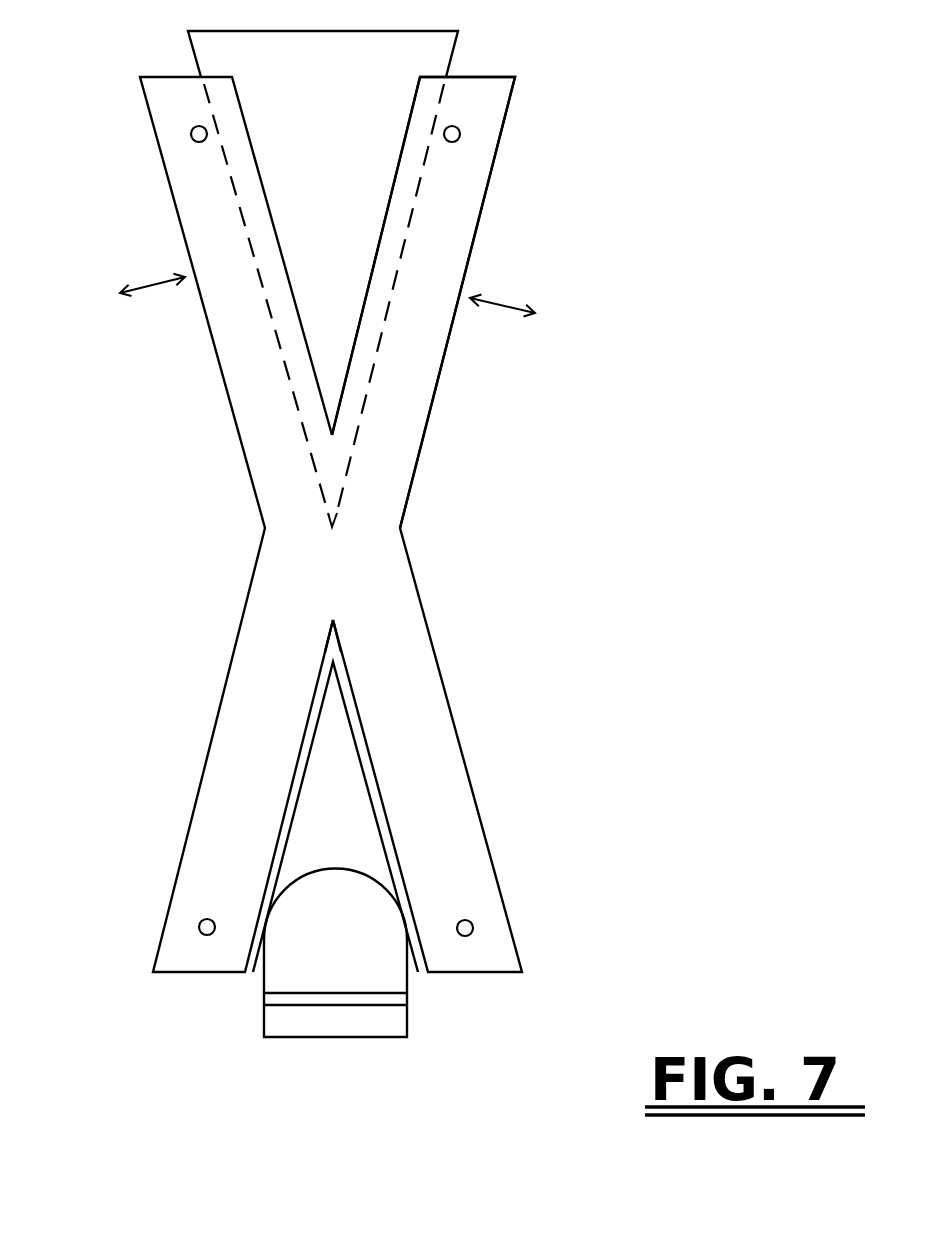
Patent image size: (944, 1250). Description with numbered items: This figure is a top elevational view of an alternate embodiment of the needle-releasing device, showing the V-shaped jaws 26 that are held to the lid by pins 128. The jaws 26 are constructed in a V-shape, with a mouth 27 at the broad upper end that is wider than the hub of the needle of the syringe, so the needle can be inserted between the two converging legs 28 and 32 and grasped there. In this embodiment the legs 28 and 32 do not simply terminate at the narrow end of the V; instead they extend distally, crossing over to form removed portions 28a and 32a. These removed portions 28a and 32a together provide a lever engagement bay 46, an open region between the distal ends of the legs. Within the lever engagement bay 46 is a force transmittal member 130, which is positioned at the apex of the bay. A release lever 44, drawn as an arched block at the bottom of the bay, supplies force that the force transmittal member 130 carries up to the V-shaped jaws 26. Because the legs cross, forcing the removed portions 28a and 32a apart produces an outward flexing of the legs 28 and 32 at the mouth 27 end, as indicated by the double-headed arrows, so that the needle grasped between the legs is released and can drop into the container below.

The jaws 26 is at (448, 197).
The mouth 27 is at (360, 103).
The leg 28 is at (242, 367).
The removed portion 28a is at (422, 699).
The leg 32 is at (410, 397).
The removed portion 32a is at (237, 755).
The release lever 44 is at (345, 955).
The lever engagement bay 46 is at (332, 823).
The pins 128 is at (191, 134).
The force transmittal member 130 is at (333, 651).